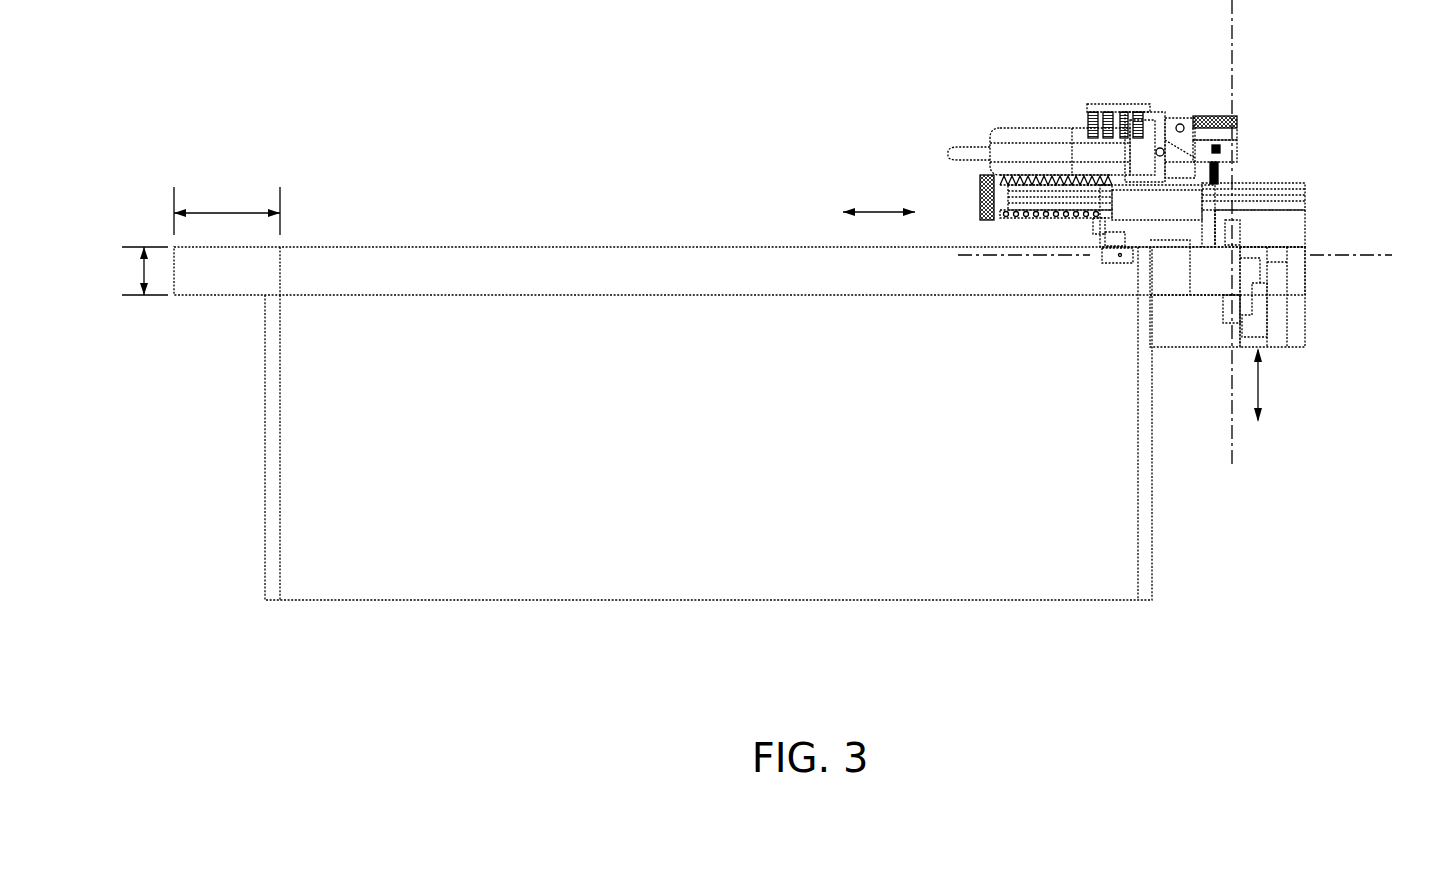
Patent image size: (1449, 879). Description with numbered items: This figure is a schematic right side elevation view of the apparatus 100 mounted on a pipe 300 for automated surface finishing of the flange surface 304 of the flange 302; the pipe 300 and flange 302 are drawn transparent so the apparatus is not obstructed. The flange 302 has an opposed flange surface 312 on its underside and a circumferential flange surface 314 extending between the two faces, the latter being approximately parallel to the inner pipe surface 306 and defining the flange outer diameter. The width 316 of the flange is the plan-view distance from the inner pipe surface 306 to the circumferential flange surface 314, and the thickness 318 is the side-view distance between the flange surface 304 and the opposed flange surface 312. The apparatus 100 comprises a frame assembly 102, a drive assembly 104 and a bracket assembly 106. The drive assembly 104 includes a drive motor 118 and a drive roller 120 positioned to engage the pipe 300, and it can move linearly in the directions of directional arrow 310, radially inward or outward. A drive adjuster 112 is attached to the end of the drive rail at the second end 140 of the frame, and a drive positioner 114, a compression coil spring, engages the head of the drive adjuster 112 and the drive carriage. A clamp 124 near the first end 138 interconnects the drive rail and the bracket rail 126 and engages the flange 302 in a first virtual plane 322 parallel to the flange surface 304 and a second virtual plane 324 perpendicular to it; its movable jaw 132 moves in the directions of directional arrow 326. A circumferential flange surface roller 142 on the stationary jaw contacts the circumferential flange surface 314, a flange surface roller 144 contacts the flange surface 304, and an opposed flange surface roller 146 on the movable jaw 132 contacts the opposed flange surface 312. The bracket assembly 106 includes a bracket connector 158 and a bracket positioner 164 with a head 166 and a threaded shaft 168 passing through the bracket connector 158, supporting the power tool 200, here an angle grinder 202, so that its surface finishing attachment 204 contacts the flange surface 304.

The apparatus 100 is at (1089, 135).
The frame assembly 102 is at (1301, 191).
The drive assembly 104 is at (1063, 100).
The bracket assembly 106 is at (1172, 108).
The drive adjuster 112 is at (980, 195).
The drive positioner 114 is at (1030, 214).
The drive motor 118 is at (1100, 106).
The drive roller 120 is at (1110, 266).
The clamp 124 is at (1306, 224).
The bracket rail 126 is at (1298, 182).
The movable jaw 132 is at (1268, 305).
The first end 138 is at (1370, 204).
The second end 140 is at (820, 173).
The circumferential flange surface roller 142 is at (1237, 260).
The flange surface roller 144 is at (1243, 233).
The opposed flange surface roller 146 is at (1228, 325).
The bracket connector 158 is at (1237, 152).
The bracket positioner 164 is at (1197, 116).
The head 166 is at (1237, 122).
The threaded shaft 168 is at (1220, 177).
The power tool 200 is at (985, 126).
The angle grinder 202 is at (1005, 128).
The surface finishing attachment 204 is at (1158, 246).
The pipe 300 is at (734, 372).
The flange 302 is at (214, 308).
The flange surface 304 is at (1188, 246).
The inner pipe surface 306 is at (1137, 410).
The directional arrow 310 is at (877, 212).
The opposed flange surface 312 is at (1172, 297).
The circumferential flange surface 314 is at (1247, 278).
The width 316 is at (220, 213).
The thickness 318 is at (140, 272).
The first virtual plane 322 is at (1100, 260).
The second virtual plane 324 is at (1233, 440).
The directional arrow 326 is at (1262, 383).